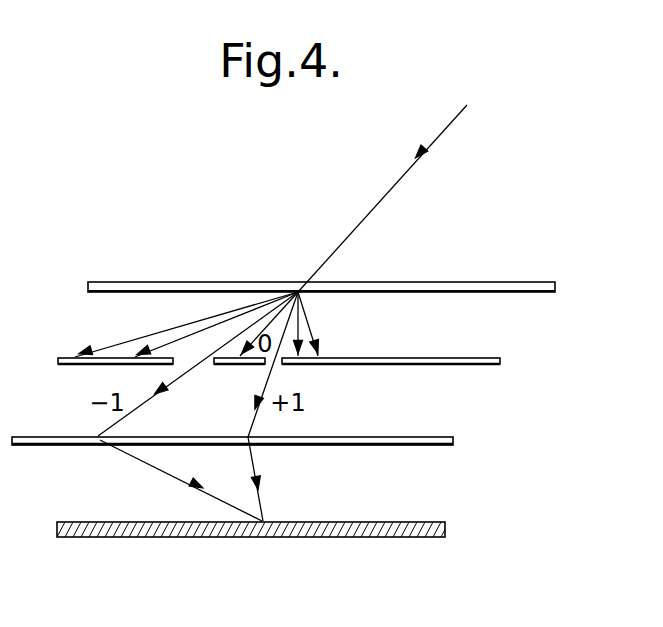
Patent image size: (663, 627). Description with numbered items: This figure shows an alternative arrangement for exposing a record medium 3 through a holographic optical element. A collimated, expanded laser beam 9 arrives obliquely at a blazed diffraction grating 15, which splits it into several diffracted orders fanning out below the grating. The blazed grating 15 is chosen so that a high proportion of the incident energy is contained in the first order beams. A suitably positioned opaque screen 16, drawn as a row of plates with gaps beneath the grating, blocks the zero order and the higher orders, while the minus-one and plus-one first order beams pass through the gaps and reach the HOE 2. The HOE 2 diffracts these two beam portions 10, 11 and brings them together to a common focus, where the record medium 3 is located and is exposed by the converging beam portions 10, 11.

The collimated, expanded laser beam 9 is at (455, 120).
The diffraction grating 15 is at (472, 281).
The opaque screen 16 is at (472, 357).
The HOE 2 is at (413, 436).
The record medium 3 is at (387, 538).
The beam portion 10 is at (163, 469).
The beam portion 11 is at (255, 469).